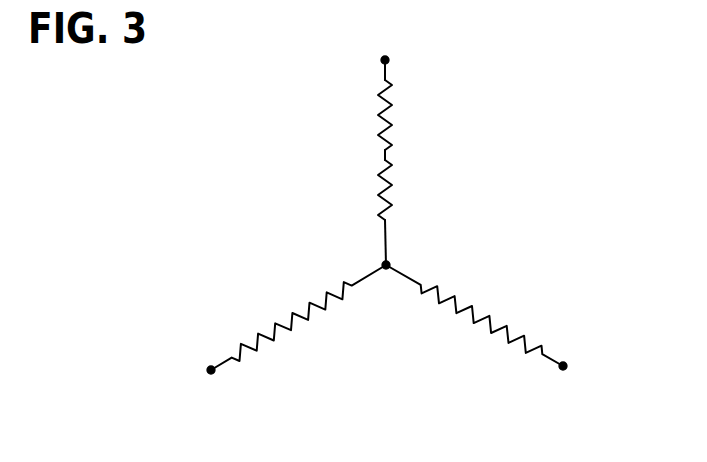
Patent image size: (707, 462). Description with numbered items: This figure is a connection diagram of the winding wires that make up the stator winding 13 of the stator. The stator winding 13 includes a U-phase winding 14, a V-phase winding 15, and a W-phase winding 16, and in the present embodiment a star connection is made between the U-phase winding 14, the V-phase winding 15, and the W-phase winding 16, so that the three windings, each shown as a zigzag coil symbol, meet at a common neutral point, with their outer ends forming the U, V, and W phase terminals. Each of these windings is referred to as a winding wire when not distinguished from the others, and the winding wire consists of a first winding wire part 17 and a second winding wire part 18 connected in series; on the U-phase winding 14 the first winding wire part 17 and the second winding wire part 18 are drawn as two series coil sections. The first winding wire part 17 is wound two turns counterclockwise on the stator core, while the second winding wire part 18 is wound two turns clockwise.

The stator winding 13 is at (388, 225).
The U-phase winding 14 is at (382, 162).
The V-phase winding 15 is at (301, 330).
The W-phase winding 16 is at (486, 307).
The first winding wire part 17 is at (392, 117).
The second winding wire part 18 is at (392, 195).